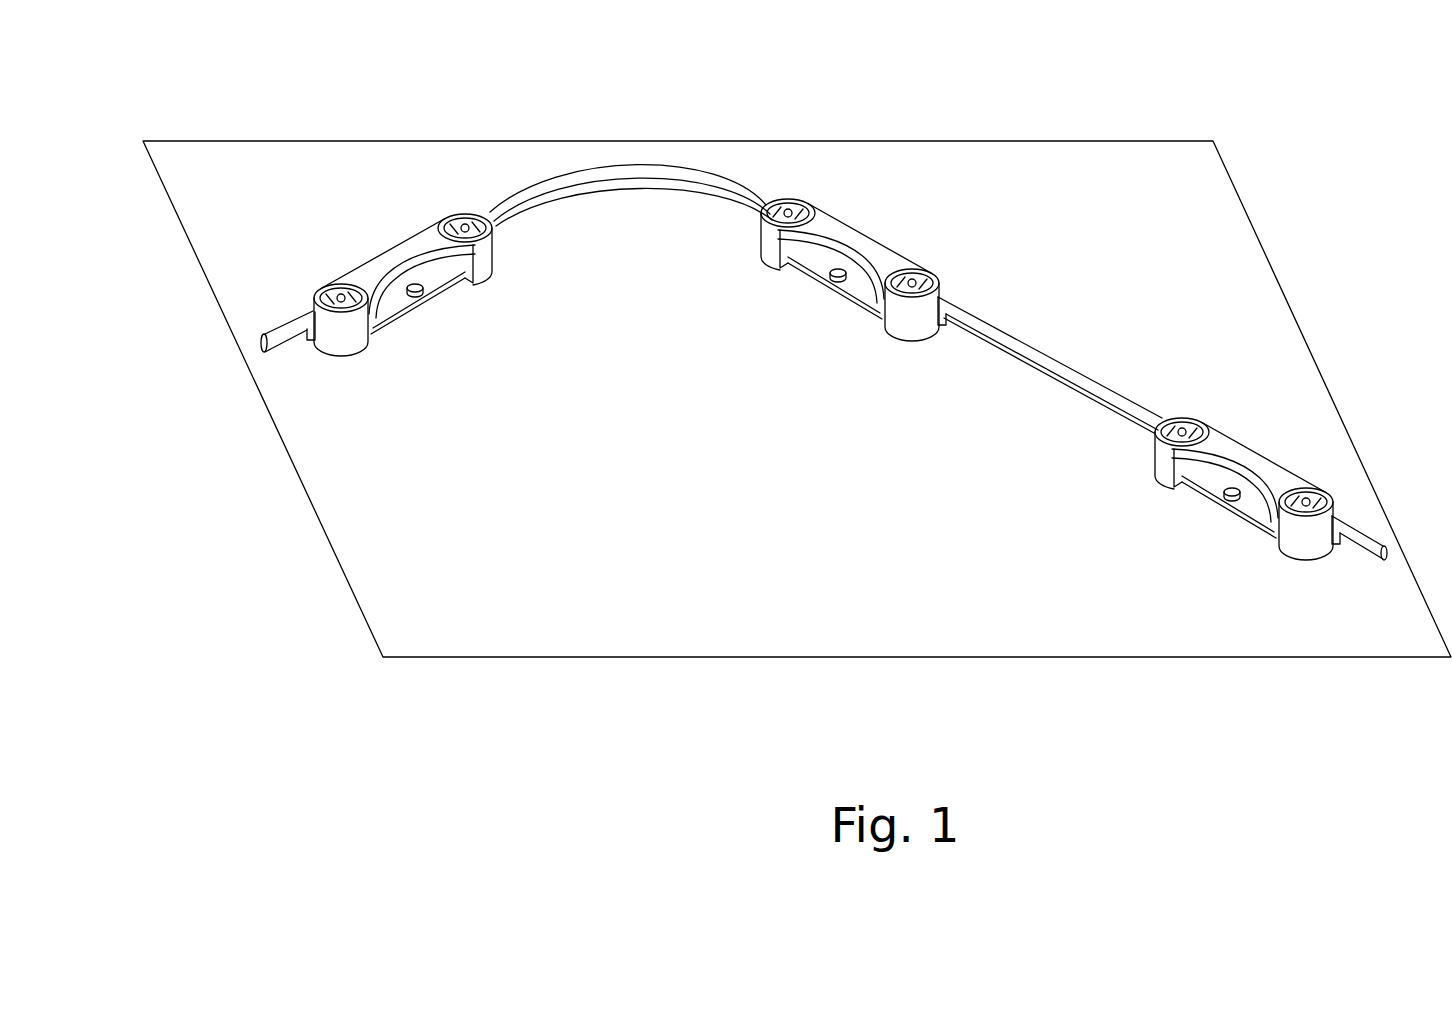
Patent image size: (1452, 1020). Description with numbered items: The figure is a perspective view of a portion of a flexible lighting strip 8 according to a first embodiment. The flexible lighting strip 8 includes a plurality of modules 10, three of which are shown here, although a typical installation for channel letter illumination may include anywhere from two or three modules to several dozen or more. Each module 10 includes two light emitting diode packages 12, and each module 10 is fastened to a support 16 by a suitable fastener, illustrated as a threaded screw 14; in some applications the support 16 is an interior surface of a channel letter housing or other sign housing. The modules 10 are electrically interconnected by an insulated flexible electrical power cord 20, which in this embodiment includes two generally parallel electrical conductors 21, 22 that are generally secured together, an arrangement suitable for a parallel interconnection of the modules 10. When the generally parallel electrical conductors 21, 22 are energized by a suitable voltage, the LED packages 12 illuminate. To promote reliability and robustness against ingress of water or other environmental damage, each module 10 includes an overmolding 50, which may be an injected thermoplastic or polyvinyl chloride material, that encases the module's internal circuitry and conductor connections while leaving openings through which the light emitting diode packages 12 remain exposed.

The flexible lighting strip 8 is at (797, 378).
The module 10 is at (821, 363).
The light emitting diode (LED) package 12 is at (343, 290).
The threaded screw 14 is at (415, 292).
The support 16 is at (662, 637).
The insulated flexible electrical power cord 20 is at (1052, 357).
The electrical conductor 21 is at (262, 340).
The electrical conductor 22 is at (262, 348).
The overmolding 50 is at (418, 232).